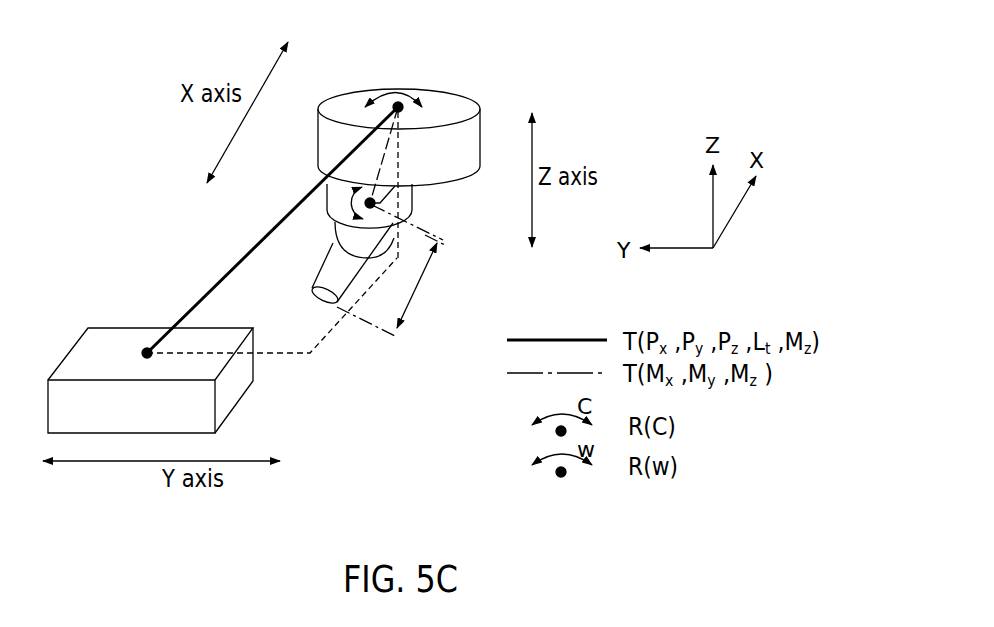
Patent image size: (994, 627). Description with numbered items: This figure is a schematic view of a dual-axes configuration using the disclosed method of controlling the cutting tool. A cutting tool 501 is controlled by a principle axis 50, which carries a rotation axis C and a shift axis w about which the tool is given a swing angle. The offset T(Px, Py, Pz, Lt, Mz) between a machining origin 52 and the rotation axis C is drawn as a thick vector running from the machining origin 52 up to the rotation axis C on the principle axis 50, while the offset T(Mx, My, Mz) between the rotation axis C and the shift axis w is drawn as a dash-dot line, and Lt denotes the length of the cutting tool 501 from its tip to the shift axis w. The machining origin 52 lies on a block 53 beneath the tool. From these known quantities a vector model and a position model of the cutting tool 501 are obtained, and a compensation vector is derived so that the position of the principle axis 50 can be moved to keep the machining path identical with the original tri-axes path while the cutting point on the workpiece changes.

The principle axis 50 is at (326, 147).
The cutting tool 501 is at (330, 270).
The machining origin 52 is at (147, 347).
The workpiece 53 is at (233, 397).